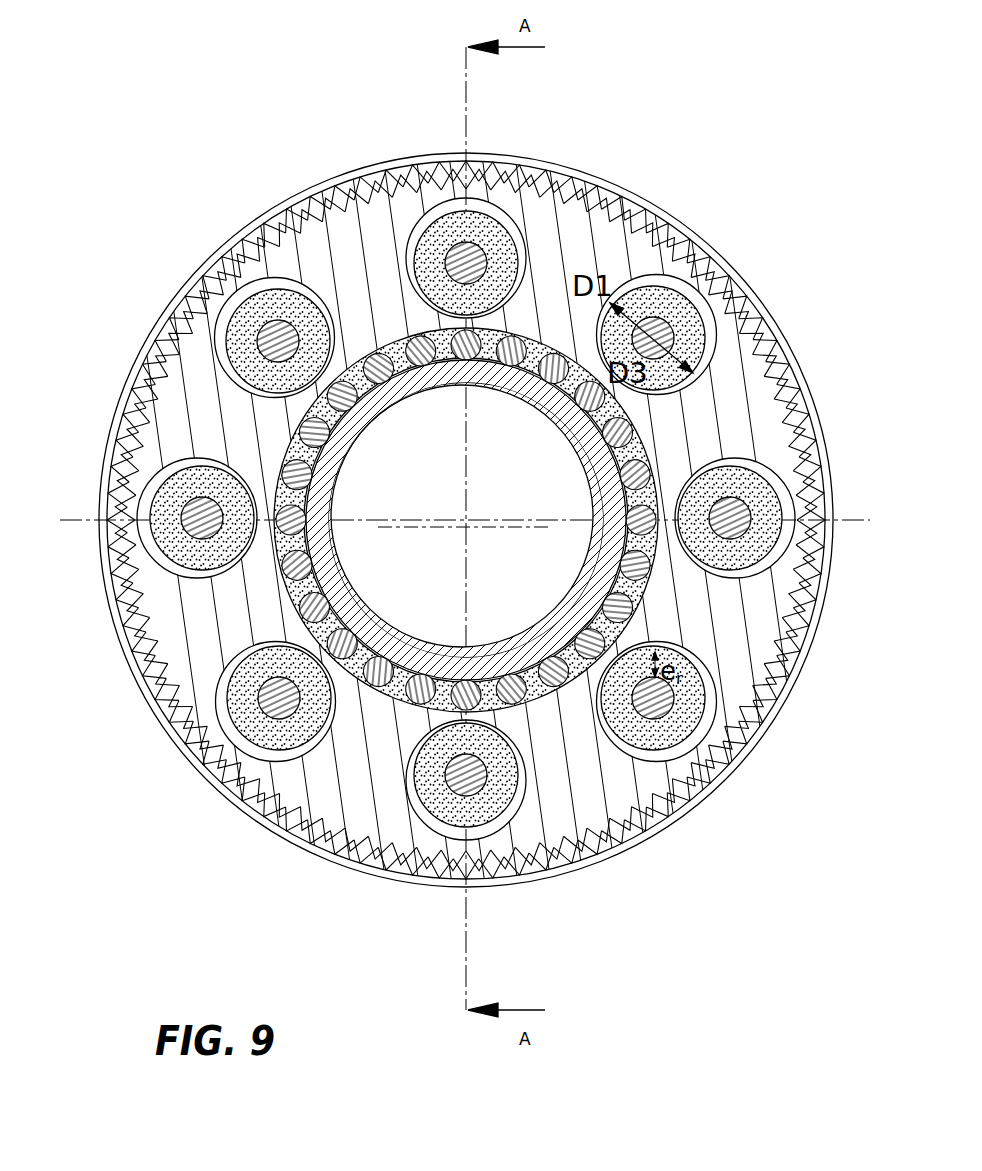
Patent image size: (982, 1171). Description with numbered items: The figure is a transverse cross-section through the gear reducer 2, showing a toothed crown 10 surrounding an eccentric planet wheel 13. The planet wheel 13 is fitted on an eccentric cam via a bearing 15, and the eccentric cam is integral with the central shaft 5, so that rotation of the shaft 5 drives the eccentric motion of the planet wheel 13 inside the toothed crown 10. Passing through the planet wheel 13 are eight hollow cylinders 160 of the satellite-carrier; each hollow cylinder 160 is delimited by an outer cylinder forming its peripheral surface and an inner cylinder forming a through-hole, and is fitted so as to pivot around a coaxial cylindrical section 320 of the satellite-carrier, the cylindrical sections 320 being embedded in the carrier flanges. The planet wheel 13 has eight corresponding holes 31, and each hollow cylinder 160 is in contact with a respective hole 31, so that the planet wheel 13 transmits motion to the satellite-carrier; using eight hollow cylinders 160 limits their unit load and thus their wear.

The gear reducer 2 is at (713, 913).
The shaft 5 is at (585, 461).
The toothed crown 10 is at (668, 214).
The eccentric planet wheel 13 is at (298, 268).
The bearing 15 is at (330, 447).
The hole 31 is at (404, 255).
The hollow cylinder 160 is at (483, 227).
The cylindrical section 320 is at (470, 262).